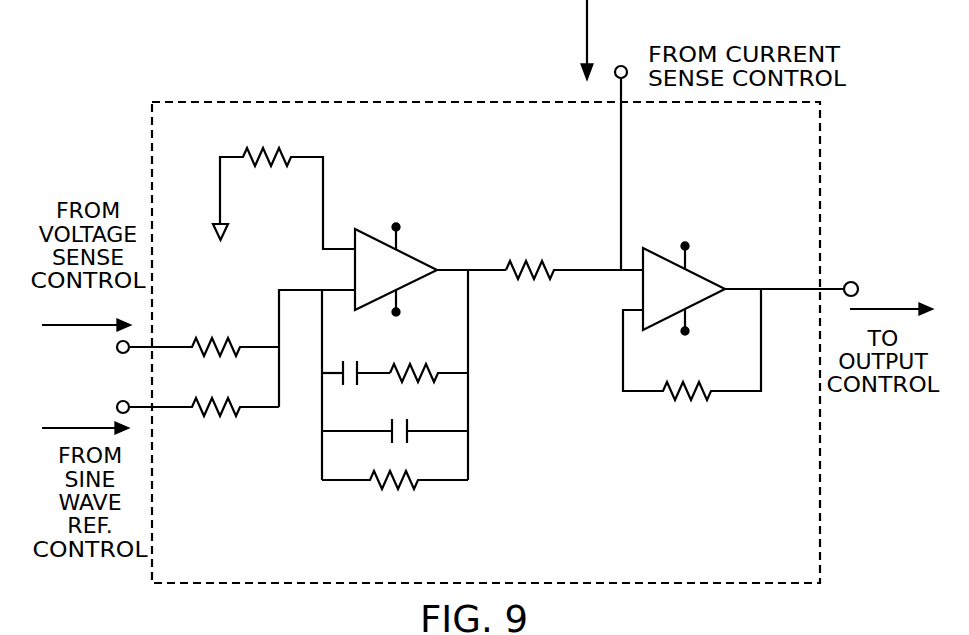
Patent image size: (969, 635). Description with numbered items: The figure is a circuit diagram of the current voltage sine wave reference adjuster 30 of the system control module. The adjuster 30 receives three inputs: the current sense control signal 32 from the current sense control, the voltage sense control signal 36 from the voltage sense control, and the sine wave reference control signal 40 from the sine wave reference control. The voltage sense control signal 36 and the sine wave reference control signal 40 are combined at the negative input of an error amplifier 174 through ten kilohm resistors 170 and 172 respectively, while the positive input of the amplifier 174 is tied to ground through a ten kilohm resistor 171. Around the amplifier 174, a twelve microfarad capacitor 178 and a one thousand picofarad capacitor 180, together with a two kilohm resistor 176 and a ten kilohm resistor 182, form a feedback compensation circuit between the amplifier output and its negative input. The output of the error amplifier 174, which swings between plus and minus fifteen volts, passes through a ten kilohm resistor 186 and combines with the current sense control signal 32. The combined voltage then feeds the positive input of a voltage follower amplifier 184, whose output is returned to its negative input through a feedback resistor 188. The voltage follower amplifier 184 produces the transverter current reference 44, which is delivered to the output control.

The current voltage sine wave reference adjuster 30 is at (822, 520).
The current sense control signal 32 is at (589, 38).
The voltage sense control signal 36 is at (98, 327).
The sine wave reference control signal 40 is at (53, 427).
The transverter current reference 44 is at (886, 305).
The 10K resistor 170 is at (214, 345).
The 10K resistor 171 is at (278, 160).
The 10K resistor 172 is at (214, 416).
The error amplifier 174 is at (370, 237).
The 2K resistor 176 is at (415, 366).
The 12 uf capacitor 178 is at (350, 366).
The 1000 pf capacitor 180 is at (400, 425).
The 10K resistor 182 is at (395, 491).
The voltage follower amplifier 184 is at (660, 251).
The 10K resistor 186 is at (535, 263).
The resistor 188 is at (684, 404).